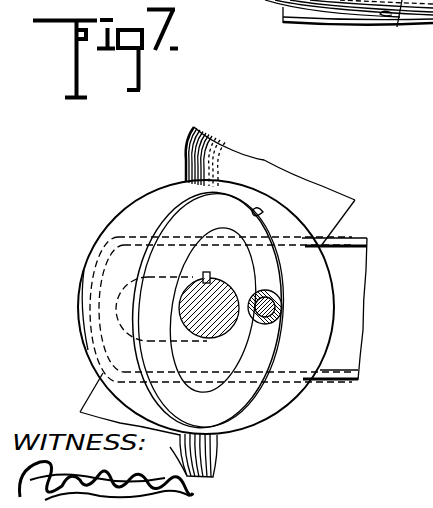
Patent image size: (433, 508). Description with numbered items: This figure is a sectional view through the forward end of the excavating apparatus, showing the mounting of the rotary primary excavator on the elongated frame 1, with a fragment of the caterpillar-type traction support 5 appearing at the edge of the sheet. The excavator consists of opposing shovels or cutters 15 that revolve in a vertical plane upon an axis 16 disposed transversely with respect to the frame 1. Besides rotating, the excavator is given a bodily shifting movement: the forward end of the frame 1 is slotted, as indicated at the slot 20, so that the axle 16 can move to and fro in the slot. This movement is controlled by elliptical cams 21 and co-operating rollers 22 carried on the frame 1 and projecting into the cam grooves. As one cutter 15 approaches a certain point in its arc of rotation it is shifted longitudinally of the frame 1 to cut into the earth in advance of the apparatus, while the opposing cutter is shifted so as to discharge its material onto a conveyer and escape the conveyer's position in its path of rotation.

The elongated frame 1 is at (337, 261).
The traction support 5 is at (285, 10).
The shovels or cutters 15 is at (231, 163).
The axis 16 is at (198, 312).
The slot 20 is at (123, 256).
The elliptical cams 21 is at (263, 212).
The rollers 22 is at (273, 300).